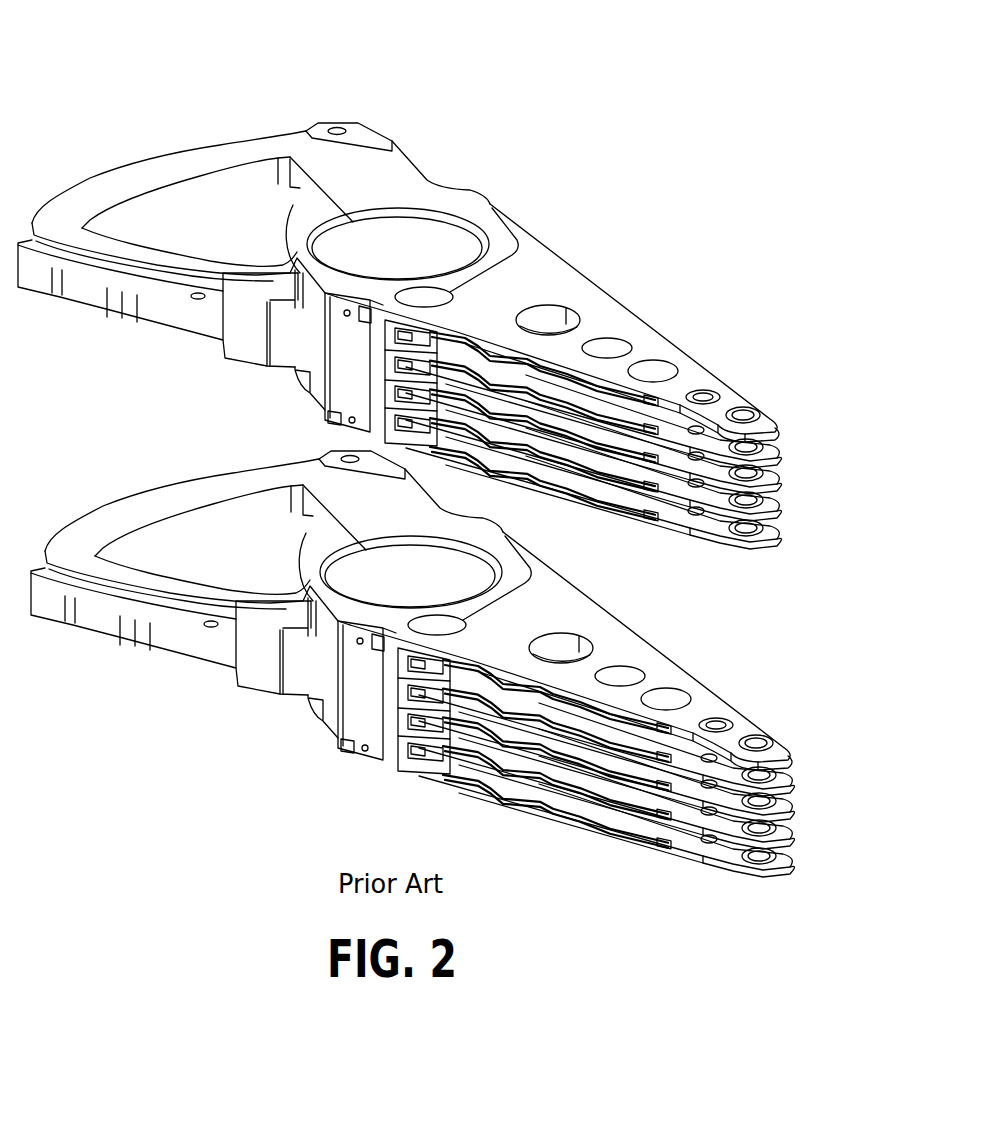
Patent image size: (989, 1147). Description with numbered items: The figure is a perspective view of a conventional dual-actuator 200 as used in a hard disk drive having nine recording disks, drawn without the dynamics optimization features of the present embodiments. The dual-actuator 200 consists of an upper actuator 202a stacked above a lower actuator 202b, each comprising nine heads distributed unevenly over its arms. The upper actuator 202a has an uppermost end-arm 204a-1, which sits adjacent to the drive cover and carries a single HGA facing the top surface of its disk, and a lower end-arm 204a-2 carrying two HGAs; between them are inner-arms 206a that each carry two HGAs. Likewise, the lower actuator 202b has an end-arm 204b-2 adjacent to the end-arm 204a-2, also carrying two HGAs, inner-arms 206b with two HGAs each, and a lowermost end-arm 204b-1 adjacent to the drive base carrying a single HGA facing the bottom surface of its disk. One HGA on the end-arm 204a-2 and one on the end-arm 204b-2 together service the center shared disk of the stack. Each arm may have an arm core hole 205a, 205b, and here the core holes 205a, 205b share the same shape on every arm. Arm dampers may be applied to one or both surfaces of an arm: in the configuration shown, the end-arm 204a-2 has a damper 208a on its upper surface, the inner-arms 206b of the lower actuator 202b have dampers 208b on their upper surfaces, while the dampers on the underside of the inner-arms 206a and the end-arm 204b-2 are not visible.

The dual-actuator 200 is at (176, 70).
The upper actuator 202a is at (493, 218).
The lower actuator 202b is at (342, 748).
The end-arm 204a-1 is at (663, 337).
The end-arm 204a-2 is at (762, 546).
The end-arm 204b-1 is at (707, 867).
The end-arm 204b-2 is at (712, 700).
The arm core hole 205a is at (552, 322).
The arm core hole 205b is at (560, 658).
The inner-arms 206a is at (790, 435).
The inner-arms 206b is at (790, 852).
The arm damper 208a is at (663, 523).
The arm dampers 208b is at (530, 710).